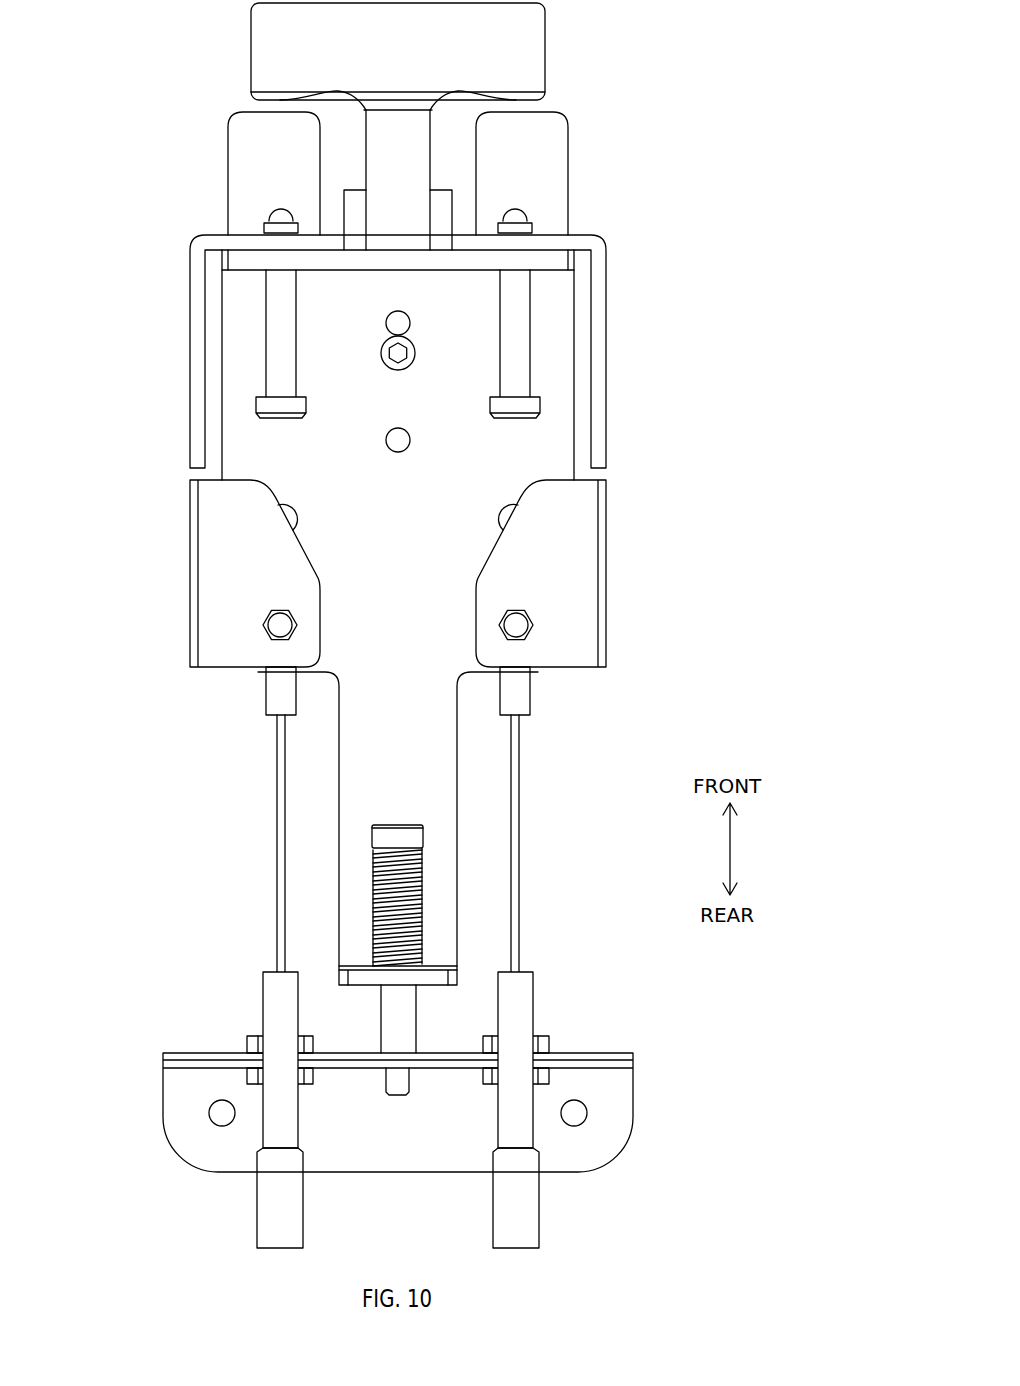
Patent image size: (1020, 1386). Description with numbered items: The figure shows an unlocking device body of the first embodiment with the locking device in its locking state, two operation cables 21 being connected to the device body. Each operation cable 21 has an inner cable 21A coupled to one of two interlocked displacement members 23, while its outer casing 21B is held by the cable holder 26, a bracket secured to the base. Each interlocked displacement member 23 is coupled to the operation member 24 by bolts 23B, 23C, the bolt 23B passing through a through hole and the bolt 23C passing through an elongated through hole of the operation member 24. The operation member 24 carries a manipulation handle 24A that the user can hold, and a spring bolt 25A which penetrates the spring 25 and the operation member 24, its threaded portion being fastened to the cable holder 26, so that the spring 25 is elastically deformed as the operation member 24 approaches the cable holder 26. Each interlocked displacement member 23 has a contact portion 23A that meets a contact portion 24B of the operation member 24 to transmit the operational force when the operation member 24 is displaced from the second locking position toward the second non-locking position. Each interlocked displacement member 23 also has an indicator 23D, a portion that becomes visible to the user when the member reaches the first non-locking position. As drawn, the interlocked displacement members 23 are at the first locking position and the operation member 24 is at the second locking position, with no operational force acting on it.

The operation cable 21 is at (402, 957).
The inner cable 21A is at (277, 800).
The outer casing 21B is at (257, 1207).
The interlocked displacement member 23 is at (190, 358).
The contact portion 23A is at (223, 235).
The bolt 23B is at (277, 312).
The bolt 23C is at (275, 622).
The indicator 23D is at (245, 135).
The operation member 24 is at (475, 480).
The manipulation handle 24A is at (545, 47).
The contact portion 24B is at (250, 262).
The spring 25 is at (423, 882).
The spring bolt 25A is at (400, 1023).
The cable holder 26 is at (597, 1053).